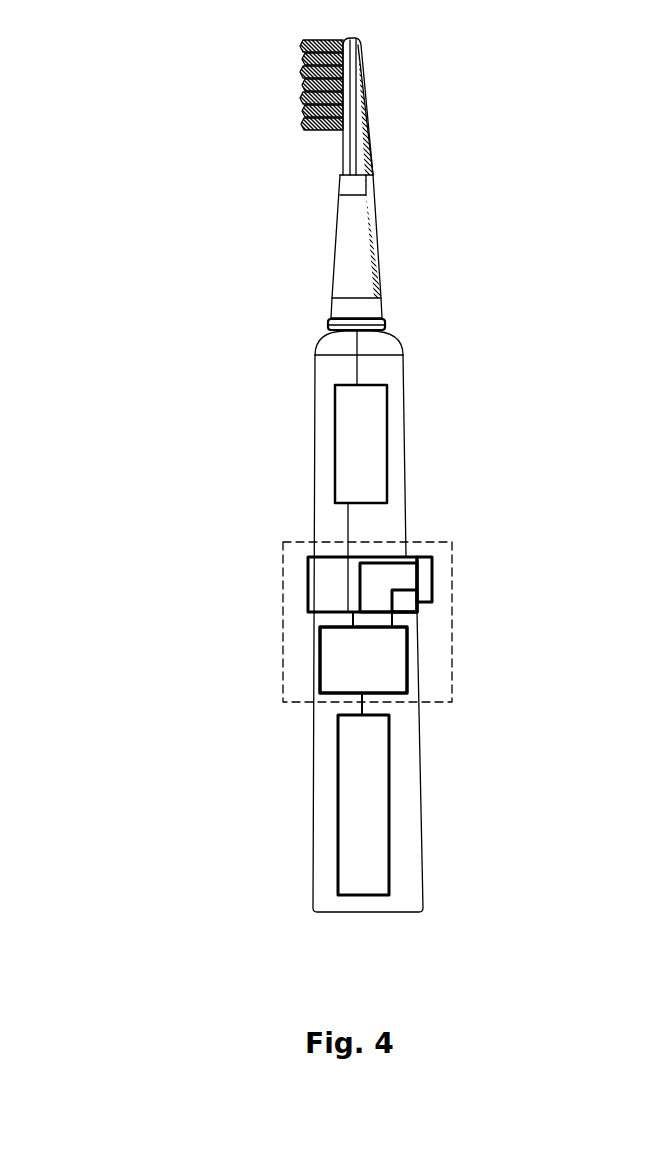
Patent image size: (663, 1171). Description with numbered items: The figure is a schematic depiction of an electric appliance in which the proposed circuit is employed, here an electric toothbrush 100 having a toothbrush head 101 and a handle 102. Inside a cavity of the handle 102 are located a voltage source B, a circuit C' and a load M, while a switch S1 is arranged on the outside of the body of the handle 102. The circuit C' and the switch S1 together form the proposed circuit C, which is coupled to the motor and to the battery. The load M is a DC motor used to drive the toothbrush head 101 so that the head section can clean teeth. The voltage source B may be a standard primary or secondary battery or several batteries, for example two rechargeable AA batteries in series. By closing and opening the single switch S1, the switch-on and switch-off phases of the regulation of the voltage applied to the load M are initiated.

The electric toothbrush 100 is at (225, 375).
The toothbrush head 101 is at (300, 83).
The handle 102 is at (308, 581).
The load M is at (387, 442).
The circuit C is at (414, 601).
The switch S1 is at (432, 580).
The circuit C' is at (422, 660).
The voltage source B is at (389, 803).